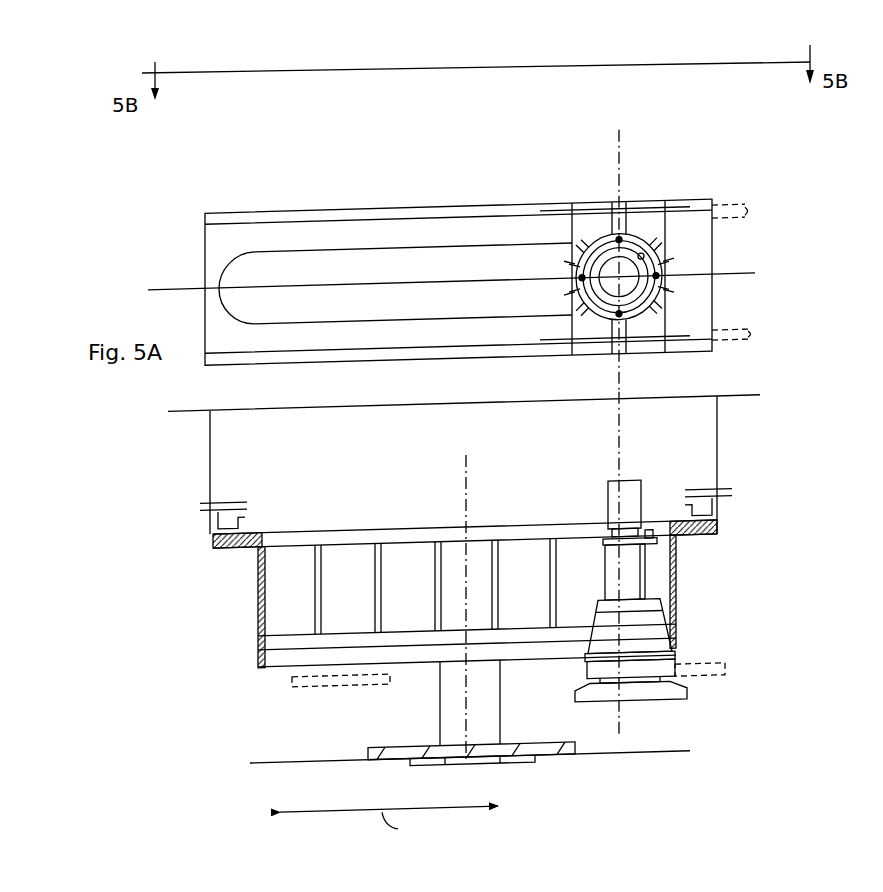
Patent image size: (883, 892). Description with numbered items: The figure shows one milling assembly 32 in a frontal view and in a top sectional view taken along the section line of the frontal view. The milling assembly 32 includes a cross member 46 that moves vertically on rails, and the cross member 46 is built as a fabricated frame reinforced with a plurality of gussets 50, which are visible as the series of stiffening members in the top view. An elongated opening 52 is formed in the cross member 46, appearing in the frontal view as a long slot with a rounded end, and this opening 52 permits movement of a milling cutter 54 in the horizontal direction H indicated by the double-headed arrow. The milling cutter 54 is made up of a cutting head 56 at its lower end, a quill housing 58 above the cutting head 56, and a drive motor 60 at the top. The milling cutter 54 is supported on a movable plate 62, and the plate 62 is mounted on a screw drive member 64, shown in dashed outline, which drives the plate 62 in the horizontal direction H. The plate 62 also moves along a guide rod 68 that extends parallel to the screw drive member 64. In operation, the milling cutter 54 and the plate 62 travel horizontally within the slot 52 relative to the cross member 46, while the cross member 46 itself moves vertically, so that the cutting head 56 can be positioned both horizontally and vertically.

In FIG. 5A, the milling assembly 32 is at (674, 139).
In FIG. 5B, the milling assembly 32 is at (150, 521).
In FIG. 5A, the cross member 46 is at (718, 267).
In FIG. 5B, the cross member 46 is at (262, 540).
In FIG. 5B, the gussets 50 is at (318, 580).
In FIG. 5A, the elongated opening 52 is at (395, 259).
In FIG. 5B, the elongated opening 52 is at (262, 544).
In FIG. 5A, the milling cutter 54 is at (672, 319).
In FIG. 5B, the milling cutter 54 is at (656, 603).
In FIG. 5B, the cutting head 56 is at (668, 719).
In FIG. 5B, the quill housing 58 is at (651, 650).
In FIG. 5B, the drive motor 60 is at (641, 515).
In FIG. 5A, the movable plate 62 is at (576, 321).
In FIG. 5B, the movable plate 62 is at (585, 689).
In FIG. 5A, the screw drive member 64 is at (744, 226).
In FIG. 5B, the screw drive member 64 is at (723, 696).
In FIG. 5A, the guide rod 68 is at (735, 360).